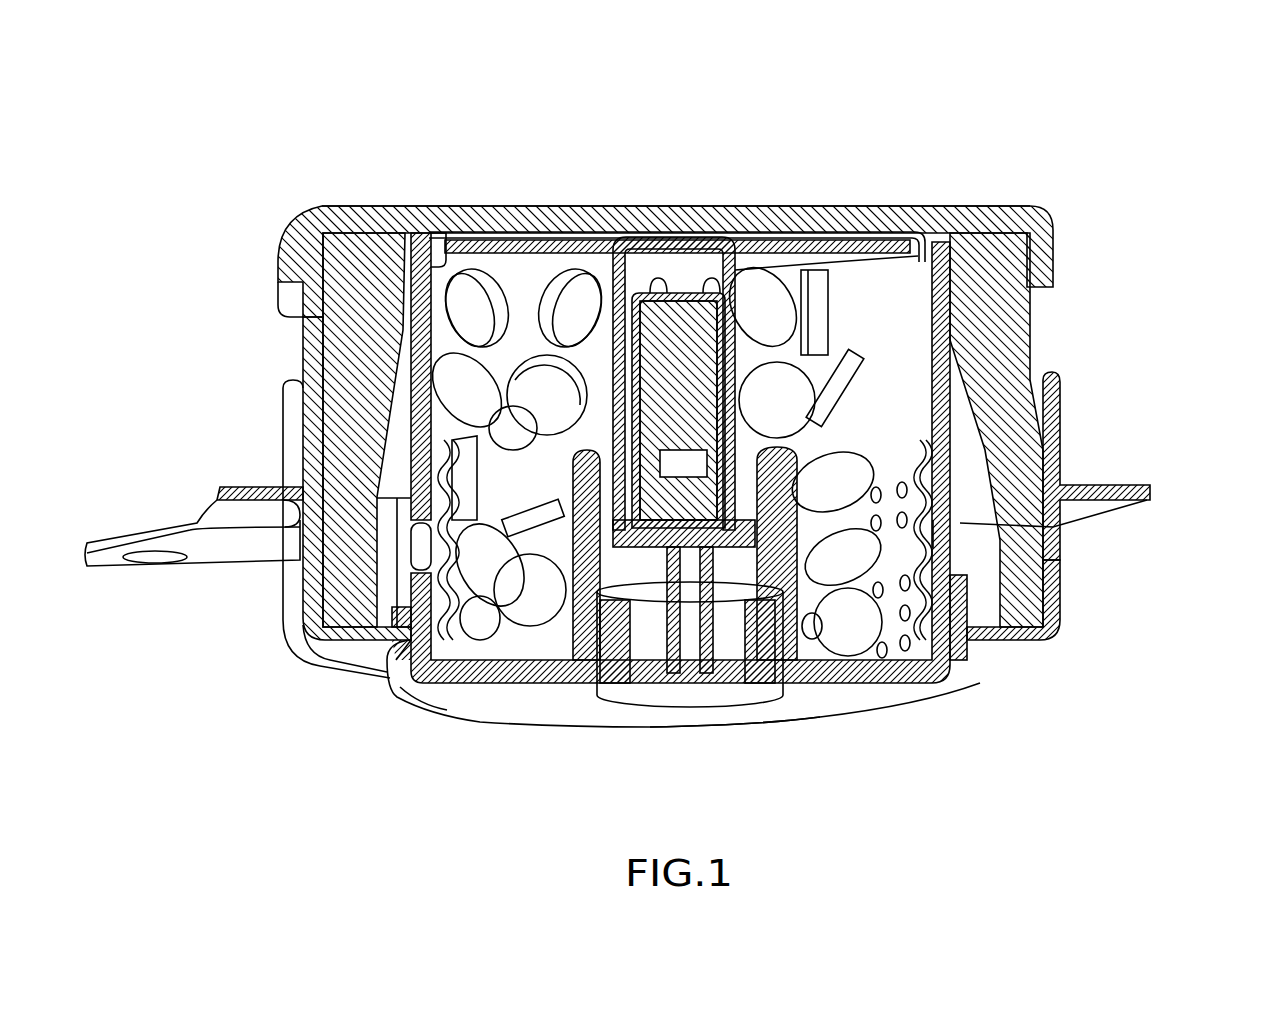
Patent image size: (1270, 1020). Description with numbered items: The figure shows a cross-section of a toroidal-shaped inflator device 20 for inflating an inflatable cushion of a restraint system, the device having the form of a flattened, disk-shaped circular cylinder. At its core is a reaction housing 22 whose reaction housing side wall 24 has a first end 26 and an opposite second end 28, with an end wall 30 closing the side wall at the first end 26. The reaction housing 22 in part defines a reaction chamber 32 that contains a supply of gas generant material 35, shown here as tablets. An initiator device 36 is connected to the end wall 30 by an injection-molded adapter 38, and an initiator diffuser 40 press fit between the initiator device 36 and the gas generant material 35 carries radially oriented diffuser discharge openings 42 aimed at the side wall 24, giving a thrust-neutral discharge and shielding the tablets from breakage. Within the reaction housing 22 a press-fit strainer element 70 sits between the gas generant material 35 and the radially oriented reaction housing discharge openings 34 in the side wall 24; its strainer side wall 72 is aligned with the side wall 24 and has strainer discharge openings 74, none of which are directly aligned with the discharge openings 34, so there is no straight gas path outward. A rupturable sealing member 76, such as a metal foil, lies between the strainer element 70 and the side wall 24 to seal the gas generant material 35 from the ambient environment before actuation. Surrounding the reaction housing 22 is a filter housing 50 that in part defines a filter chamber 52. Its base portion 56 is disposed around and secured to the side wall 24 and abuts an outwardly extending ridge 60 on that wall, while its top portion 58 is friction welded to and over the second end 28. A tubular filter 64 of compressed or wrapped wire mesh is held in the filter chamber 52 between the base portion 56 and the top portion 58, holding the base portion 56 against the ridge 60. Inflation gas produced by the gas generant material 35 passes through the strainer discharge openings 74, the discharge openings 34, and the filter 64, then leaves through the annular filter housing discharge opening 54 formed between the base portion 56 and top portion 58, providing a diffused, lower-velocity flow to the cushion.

The inflator device 20 is at (1180, 240).
The reaction housing 22 is at (886, 716).
The reaction housing side wall 24 is at (935, 242).
The first end 26 is at (405, 655).
The second end 28 is at (418, 235).
The end wall 30 is at (790, 722).
The reaction chamber 32 is at (868, 305).
The reaction housing discharge openings 34 is at (417, 553).
The gas generant material 35 is at (572, 268).
The initiator device 36 is at (657, 575).
The adapter 38 is at (725, 575).
The initiator diffuser 40 is at (655, 236).
The diffuser discharge openings 42 is at (712, 283).
The filter housing 50 is at (1080, 432).
The filter chamber 52 is at (320, 216).
The filter housing discharge opening 54 is at (278, 280).
The base portion 56 is at (283, 462).
The top portion 58 is at (374, 207).
The ridge 60 is at (975, 650).
The filter 64 is at (997, 272).
The strainer element 70 is at (912, 440).
The strainer side wall 72 is at (905, 558).
The strainer discharge openings 74 is at (905, 520).
The rupturable sealing member 76 is at (933, 533).